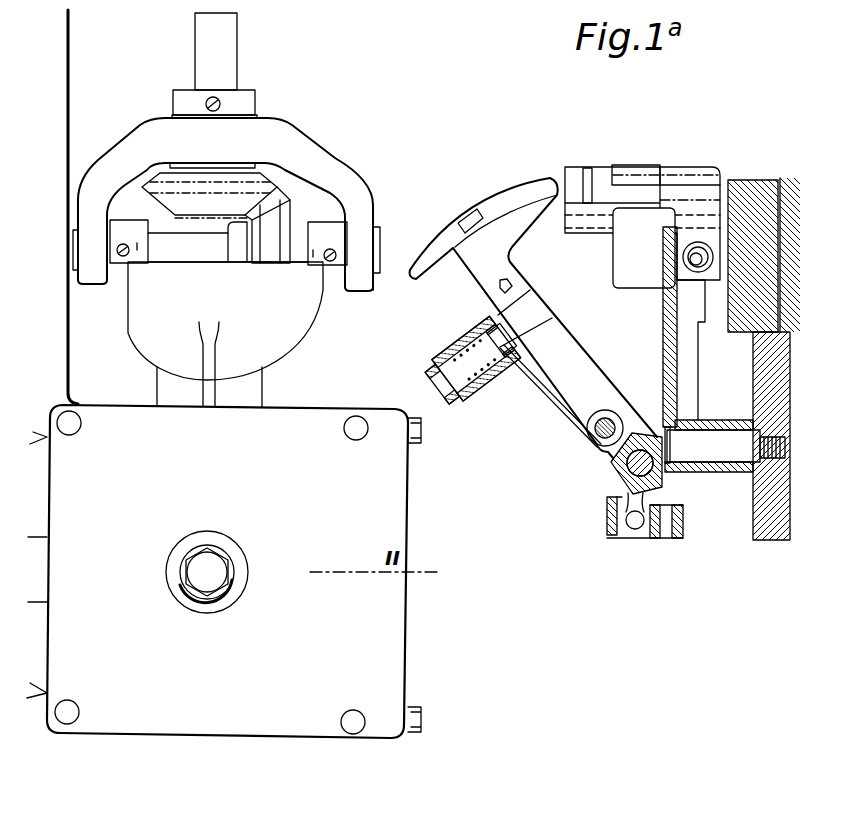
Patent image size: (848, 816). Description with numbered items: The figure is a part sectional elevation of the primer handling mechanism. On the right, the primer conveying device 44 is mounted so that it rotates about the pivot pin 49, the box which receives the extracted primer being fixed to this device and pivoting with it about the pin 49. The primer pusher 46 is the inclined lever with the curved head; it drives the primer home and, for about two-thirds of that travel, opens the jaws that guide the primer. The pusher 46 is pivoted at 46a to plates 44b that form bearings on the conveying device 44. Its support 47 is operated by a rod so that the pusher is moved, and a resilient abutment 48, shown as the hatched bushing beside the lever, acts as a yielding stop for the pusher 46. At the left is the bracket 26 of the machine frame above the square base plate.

The bracket yoke 26 is at (338, 168).
The primer conveying device 44 is at (670, 335).
The plates forming bearings 44b is at (655, 437).
The primer pusher 46 is at (512, 284).
The pusher pivot 46a is at (615, 470).
The pusher support 47 is at (565, 408).
The resilient abutment 48 is at (480, 316).
The pivot pin 49 is at (723, 455).